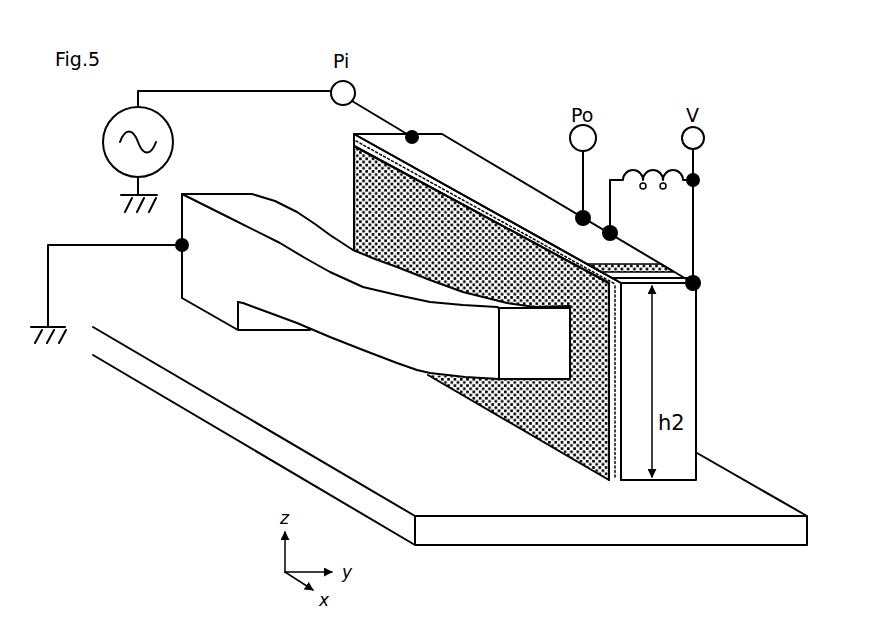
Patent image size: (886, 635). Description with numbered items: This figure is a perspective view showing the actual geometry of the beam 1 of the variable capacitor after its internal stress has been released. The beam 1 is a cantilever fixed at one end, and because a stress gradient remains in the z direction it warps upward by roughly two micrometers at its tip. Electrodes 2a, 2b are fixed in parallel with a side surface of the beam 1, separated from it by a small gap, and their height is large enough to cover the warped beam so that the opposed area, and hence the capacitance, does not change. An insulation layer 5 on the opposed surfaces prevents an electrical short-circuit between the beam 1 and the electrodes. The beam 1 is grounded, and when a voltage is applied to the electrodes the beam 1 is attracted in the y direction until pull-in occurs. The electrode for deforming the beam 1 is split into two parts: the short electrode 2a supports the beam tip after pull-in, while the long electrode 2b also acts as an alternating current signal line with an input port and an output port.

The beam 1 is at (370, 345).
The electrode 2a is at (670, 286).
The electrode 2b is at (466, 160).
The insulation layer 5 is at (383, 176).